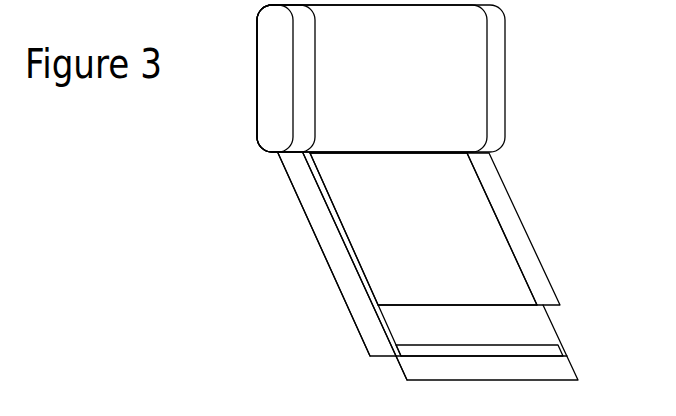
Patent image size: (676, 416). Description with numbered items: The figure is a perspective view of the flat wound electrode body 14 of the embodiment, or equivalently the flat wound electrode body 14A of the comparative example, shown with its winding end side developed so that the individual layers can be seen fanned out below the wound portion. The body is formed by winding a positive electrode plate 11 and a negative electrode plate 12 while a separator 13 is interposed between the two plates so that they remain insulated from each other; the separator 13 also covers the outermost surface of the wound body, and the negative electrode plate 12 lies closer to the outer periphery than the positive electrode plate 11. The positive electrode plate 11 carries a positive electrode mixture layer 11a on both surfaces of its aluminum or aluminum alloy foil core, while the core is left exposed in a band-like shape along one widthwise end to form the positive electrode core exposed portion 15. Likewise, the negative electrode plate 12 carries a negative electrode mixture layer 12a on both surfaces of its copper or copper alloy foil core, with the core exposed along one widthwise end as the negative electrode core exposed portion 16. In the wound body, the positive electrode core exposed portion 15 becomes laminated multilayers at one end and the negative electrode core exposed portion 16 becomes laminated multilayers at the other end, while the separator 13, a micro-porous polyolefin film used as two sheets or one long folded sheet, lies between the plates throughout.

The positive electrode plate 11 is at (453, 177).
The positive electrode mixture layer 11a is at (460, 212).
The negative electrode plate 12 is at (310, 193).
The negative electrode mixture layer 12a is at (397, 345).
The separator 13 is at (338, 43).
The flat wound electrode body 14 is at (508, 60).
The flat wound electrode body 14A is at (437, 78).
The positive electrode core exposed portion 15 is at (497, 107).
The negative electrode core exposed portion 16 is at (303, 80).